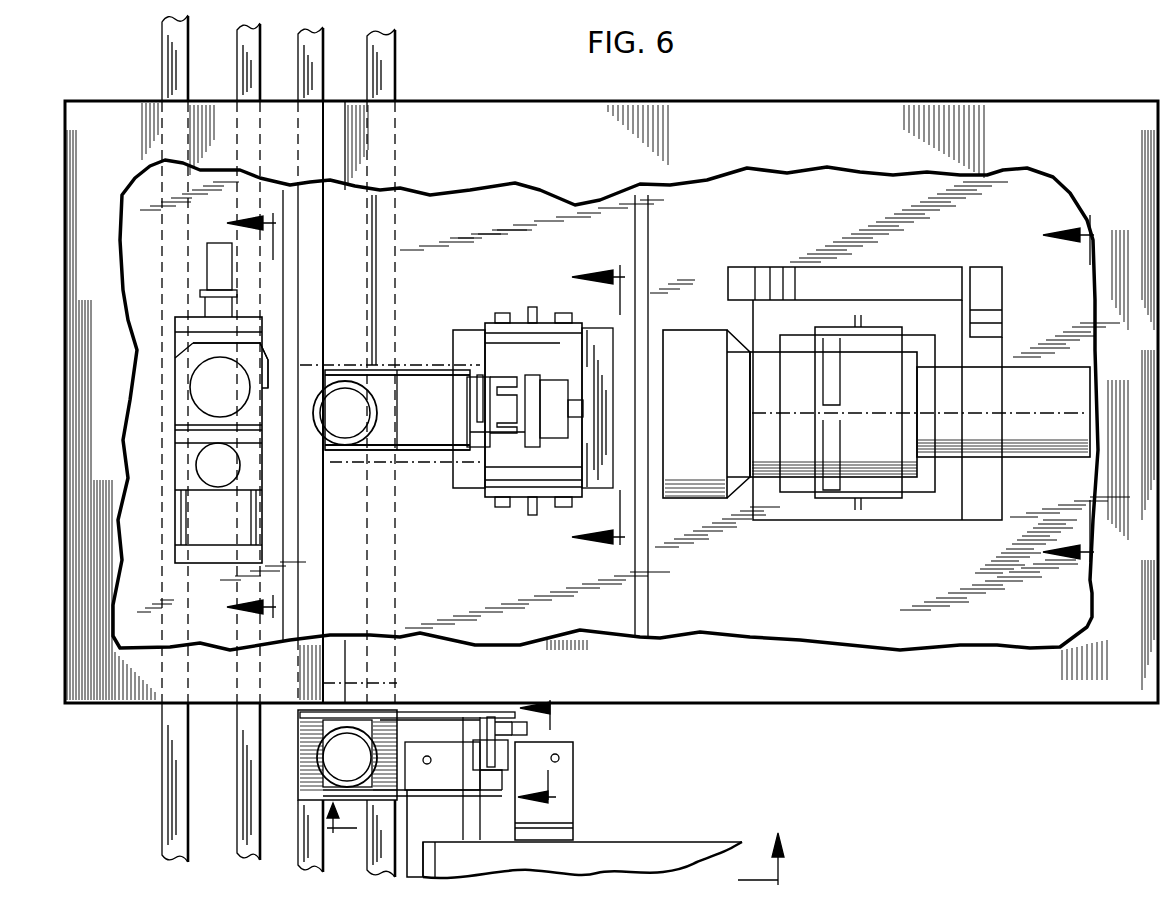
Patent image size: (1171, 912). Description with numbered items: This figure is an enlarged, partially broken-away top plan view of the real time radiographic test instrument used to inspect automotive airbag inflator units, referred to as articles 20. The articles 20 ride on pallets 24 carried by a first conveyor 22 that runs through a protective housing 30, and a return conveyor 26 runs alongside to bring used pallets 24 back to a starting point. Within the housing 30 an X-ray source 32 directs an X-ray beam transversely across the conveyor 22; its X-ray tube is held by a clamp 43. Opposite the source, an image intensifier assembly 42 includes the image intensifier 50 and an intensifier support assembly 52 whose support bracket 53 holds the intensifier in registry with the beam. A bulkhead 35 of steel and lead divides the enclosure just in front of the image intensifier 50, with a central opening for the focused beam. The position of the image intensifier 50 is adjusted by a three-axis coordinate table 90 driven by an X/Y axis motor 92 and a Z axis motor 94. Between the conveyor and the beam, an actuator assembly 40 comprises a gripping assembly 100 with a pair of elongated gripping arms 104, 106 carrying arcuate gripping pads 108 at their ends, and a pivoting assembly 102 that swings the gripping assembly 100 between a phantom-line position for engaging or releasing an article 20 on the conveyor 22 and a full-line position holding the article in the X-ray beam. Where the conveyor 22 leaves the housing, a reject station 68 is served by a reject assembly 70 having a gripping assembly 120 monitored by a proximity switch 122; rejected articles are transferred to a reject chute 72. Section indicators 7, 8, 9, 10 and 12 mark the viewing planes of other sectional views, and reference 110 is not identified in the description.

The section line 7- 7 is at (598, 405).
The section line 8- 8 is at (564, 846).
The section line 9- 9 is at (548, 761).
The section line 10- 10 is at (251, 416).
The section line 12- 12 is at (1068, 394).
The article 20 is at (318, 412).
The first conveyor 22 is at (388, 78).
The pallet 24 is at (378, 342).
The return conveyor 26 is at (172, 52).
The housing 30 is at (882, 100).
The X-ray source 32 is at (162, 399).
The bulkhead 35 is at (641, 277).
The actuator assembly 40 is at (520, 414).
The image intensifier assembly 42 is at (876, 395).
The clamp 43 is at (253, 352).
The image intensifier 50 is at (717, 334).
The intensifier support assembly 52 is at (923, 327).
The support bracket 53 is at (880, 496).
The reject station 68 is at (563, 761).
The reject assembly 70 is at (586, 742).
The reject chute 72 is at (587, 834).
The three-axis coordinate table 90 is at (940, 521).
The X/Y axis motor 92 is at (985, 265).
The Z axis motor 94 is at (740, 276).
The gripping assembly 100 is at (520, 394).
The pivoting assembly 102 is at (545, 320).
The gripping arm 104 is at (427, 368).
The gripping arm 106 is at (428, 460).
The gripping pad 108 is at (377, 413).
The coupling 110 is at (494, 372).
The gripping assembly 120 is at (423, 712).
The proximity switch 122 is at (495, 724).